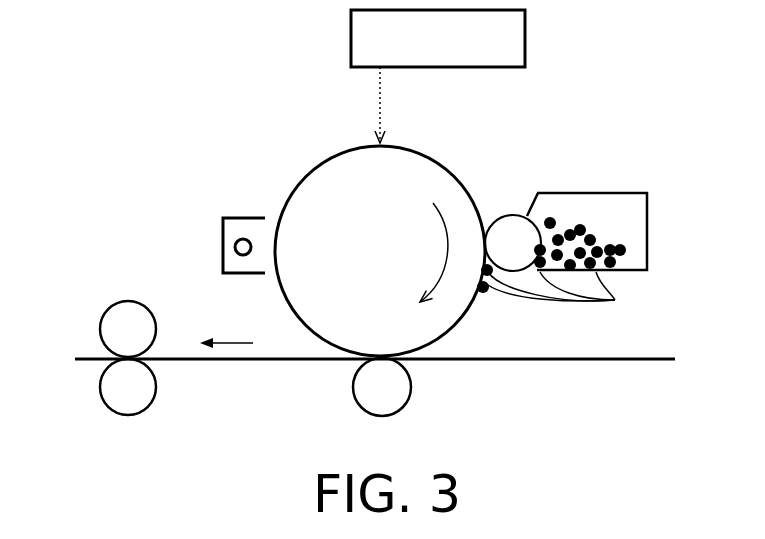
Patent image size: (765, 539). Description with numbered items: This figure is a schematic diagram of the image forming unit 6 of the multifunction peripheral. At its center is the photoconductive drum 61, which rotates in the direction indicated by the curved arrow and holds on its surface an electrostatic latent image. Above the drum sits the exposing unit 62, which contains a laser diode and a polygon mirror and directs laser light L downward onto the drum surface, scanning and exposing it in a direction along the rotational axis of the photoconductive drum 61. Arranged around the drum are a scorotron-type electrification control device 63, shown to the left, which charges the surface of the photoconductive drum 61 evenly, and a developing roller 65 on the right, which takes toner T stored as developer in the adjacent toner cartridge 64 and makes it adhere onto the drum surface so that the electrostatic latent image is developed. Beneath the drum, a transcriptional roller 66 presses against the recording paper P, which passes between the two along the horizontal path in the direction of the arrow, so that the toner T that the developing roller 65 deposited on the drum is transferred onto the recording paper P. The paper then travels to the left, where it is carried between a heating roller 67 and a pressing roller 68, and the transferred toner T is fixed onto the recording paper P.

The image forming unit 6 is at (198, 69).
The photoconductive drum 61 is at (325, 160).
The exposing unit 62 is at (527, 38).
The scorotron-type electrification control device 63 is at (223, 250).
The toner cartridge 64 is at (616, 192).
The developing roller 65 is at (505, 215).
The transcriptional roller 66 is at (408, 400).
The heating roller 67 is at (107, 308).
The pressing roller 68 is at (156, 397).
The laser light L is at (381, 97).
The toner T is at (559, 268).
The recording paper P is at (614, 362).